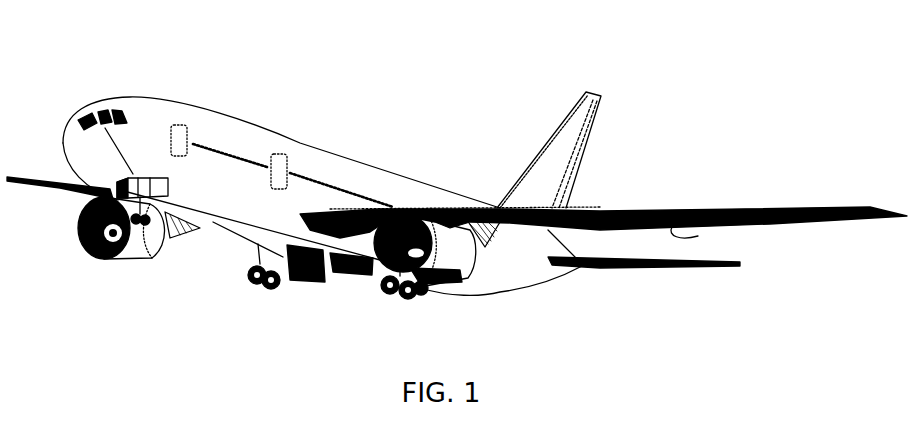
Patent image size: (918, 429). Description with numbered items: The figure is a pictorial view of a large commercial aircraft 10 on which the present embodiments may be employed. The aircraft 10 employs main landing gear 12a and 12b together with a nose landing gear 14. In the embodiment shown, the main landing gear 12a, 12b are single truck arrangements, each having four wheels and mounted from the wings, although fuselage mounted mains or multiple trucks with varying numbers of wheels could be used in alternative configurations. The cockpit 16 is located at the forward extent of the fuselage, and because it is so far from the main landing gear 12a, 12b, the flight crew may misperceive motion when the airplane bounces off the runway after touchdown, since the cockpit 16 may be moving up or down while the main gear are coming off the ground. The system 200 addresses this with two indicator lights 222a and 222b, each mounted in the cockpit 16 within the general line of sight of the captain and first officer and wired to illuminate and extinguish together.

The aircraft 10 is at (307, 130).
The main landing gear 12a is at (427, 297).
The main landing gear 12b is at (252, 282).
The nose landing gear 14 is at (143, 238).
The cockpit 16 is at (188, 71).
The system 200 is at (179, 183).
The indicator light 222a is at (188, 95).
The indicator light 222b is at (110, 128).